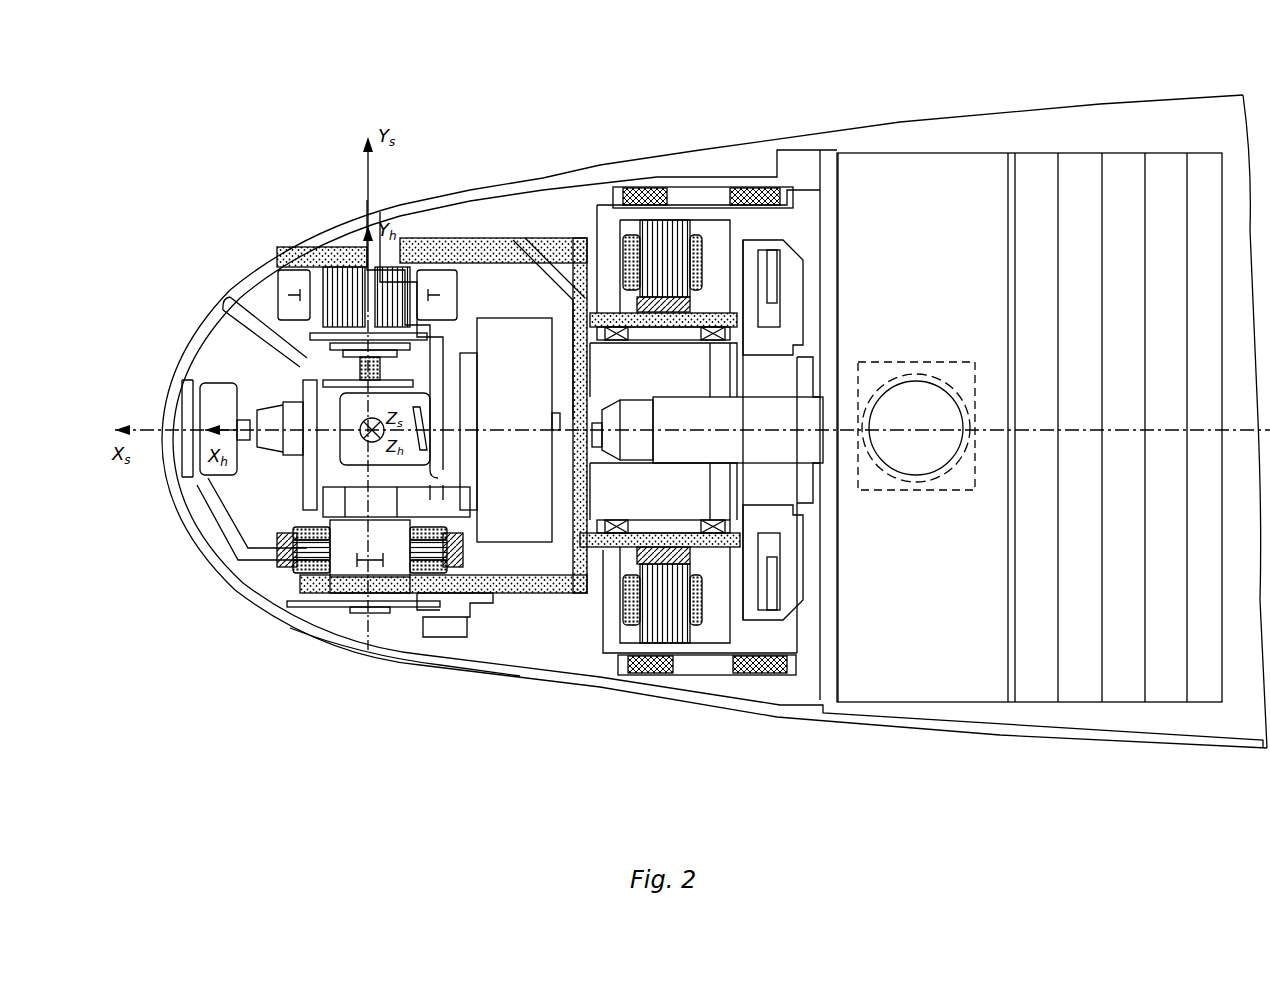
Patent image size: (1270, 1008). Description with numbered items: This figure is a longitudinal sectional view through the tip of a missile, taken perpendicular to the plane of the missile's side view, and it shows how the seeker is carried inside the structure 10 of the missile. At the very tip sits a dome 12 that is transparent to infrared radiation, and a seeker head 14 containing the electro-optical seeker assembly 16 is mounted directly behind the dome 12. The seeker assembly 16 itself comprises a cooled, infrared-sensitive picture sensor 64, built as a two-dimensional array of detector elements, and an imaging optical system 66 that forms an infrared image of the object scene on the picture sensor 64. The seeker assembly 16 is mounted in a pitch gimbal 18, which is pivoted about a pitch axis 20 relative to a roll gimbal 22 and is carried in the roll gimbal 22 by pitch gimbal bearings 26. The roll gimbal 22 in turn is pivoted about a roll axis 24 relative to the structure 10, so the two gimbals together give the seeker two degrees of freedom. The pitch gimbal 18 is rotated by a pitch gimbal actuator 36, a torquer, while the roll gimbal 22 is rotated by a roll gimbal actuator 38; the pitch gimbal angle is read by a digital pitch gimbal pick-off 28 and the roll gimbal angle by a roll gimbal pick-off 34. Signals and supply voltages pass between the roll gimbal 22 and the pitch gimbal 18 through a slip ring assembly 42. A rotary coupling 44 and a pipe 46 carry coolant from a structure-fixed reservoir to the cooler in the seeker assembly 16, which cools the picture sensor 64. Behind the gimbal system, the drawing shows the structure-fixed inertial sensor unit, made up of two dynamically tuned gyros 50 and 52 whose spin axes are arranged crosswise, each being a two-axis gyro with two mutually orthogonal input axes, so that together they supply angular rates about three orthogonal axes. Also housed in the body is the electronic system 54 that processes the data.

The structure of the missile 10 is at (1010, 100).
The dome 12 is at (207, 560).
The seeker head 14 is at (443, 650).
The seeker assembly 16 is at (205, 505).
The pitch gimbal 18 is at (420, 500).
The pitch axis 20 is at (368, 600).
The roll gimbal 22 is at (470, 243).
The roll axis 24 is at (503, 430).
The pitch gimbal bearings 26 is at (323, 573).
The digital pitch gimbal pick-off 28 is at (467, 612).
The roll gimbal pick-off 34 is at (772, 600).
The pitch gimbal actuator 36 is at (280, 570).
The roll gimbal actuator 38 is at (670, 607).
The slip ring assembly 42 is at (330, 282).
The rotary coupling 44 is at (598, 425).
The pipe 46 is at (548, 255).
The dynamically tuned gyro 50 is at (875, 375).
The dynamically tuned gyro 52 is at (930, 452).
The electronic system 54 is at (1125, 660).
The picture sensor 64 is at (255, 425).
The imaging optical system 66 is at (200, 375).